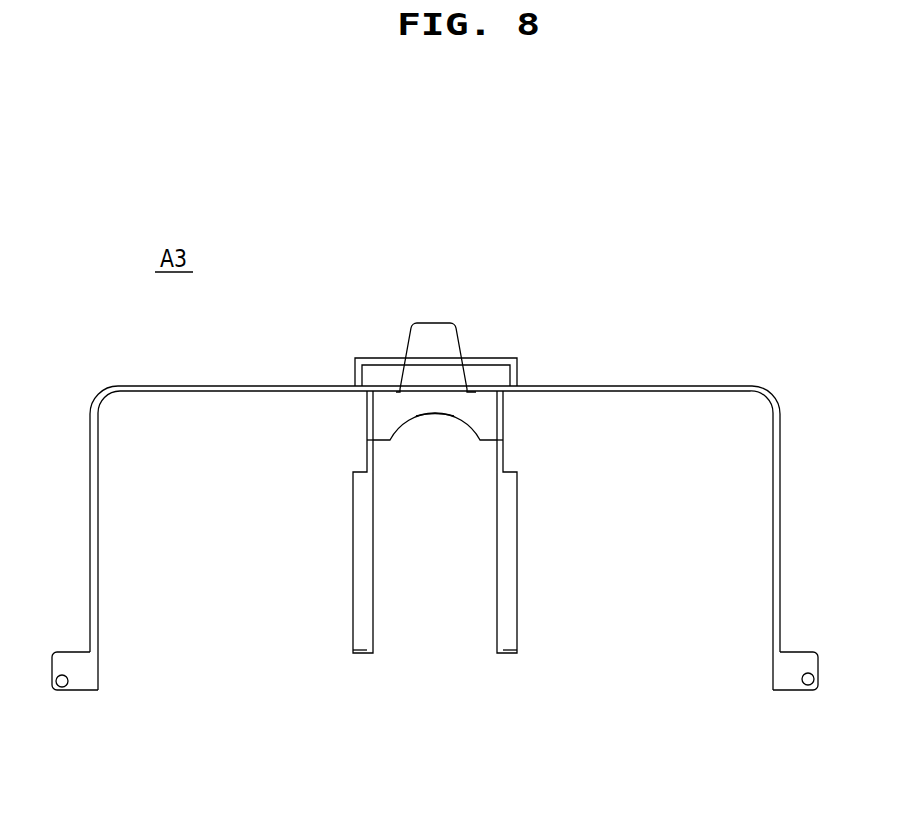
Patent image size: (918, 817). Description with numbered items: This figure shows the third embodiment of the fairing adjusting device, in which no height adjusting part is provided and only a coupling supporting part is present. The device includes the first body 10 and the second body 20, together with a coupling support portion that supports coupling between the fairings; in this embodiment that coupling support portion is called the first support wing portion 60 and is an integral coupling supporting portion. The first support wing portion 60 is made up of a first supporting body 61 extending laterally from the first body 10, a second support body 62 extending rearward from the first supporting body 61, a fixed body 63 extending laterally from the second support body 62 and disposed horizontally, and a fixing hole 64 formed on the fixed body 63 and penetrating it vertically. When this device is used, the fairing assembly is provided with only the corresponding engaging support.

The first body 10 is at (480, 333).
The second body 20 is at (542, 526).
The first support wing portion 60 is at (464, 547).
The first supporting body 61 is at (666, 386).
The second support body 62 is at (773, 465).
The fixed body 63 is at (792, 658).
The fixing hole 64 is at (813, 677).